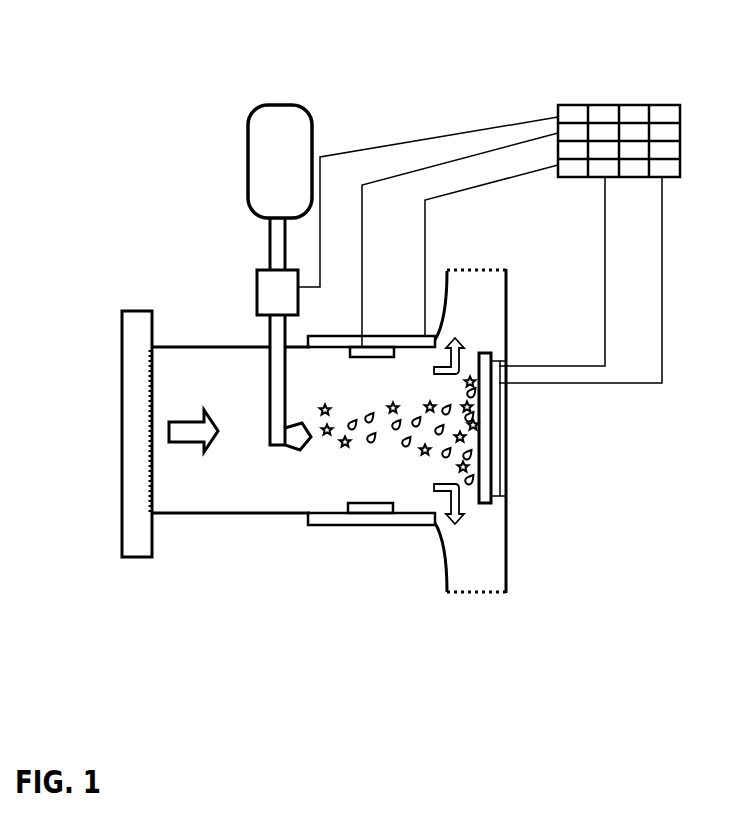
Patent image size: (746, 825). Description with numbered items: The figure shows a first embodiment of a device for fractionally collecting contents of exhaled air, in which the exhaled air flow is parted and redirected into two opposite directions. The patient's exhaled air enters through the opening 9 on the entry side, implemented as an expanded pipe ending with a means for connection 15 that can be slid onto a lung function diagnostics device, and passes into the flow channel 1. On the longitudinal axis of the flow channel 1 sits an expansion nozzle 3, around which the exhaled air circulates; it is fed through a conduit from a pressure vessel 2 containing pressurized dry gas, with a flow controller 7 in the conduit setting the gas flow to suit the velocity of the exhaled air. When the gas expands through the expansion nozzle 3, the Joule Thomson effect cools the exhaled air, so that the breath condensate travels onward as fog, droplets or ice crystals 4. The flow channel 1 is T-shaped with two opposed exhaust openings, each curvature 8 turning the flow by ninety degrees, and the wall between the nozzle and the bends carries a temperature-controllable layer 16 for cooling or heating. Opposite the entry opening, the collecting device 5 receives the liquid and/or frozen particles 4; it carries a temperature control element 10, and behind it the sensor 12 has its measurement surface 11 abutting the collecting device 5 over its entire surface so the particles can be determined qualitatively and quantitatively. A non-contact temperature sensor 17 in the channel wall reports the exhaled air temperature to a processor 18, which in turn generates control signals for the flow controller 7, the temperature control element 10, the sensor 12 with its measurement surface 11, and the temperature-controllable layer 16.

The flow channel 1 is at (238, 485).
The pressure vessel 2 is at (312, 148).
The expansion nozzle 3 is at (294, 450).
The condensed and/or frozen breath condensate 4 is at (382, 425).
The collecting device 5 is at (562, 431).
The flow controller 7 is at (252, 297).
The curvature 8 is at (488, 337).
The opening on the entry side 9 is at (107, 358).
The temperature control element 10 is at (490, 401).
The measurement surface of the sensor 11 is at (500, 418).
The sensor 12 is at (500, 447).
The means for connection 15 is at (133, 307).
The temperature-controllable layer 16 is at (344, 336).
The temperature sensor 17 is at (375, 353).
The processor 18 is at (632, 113).